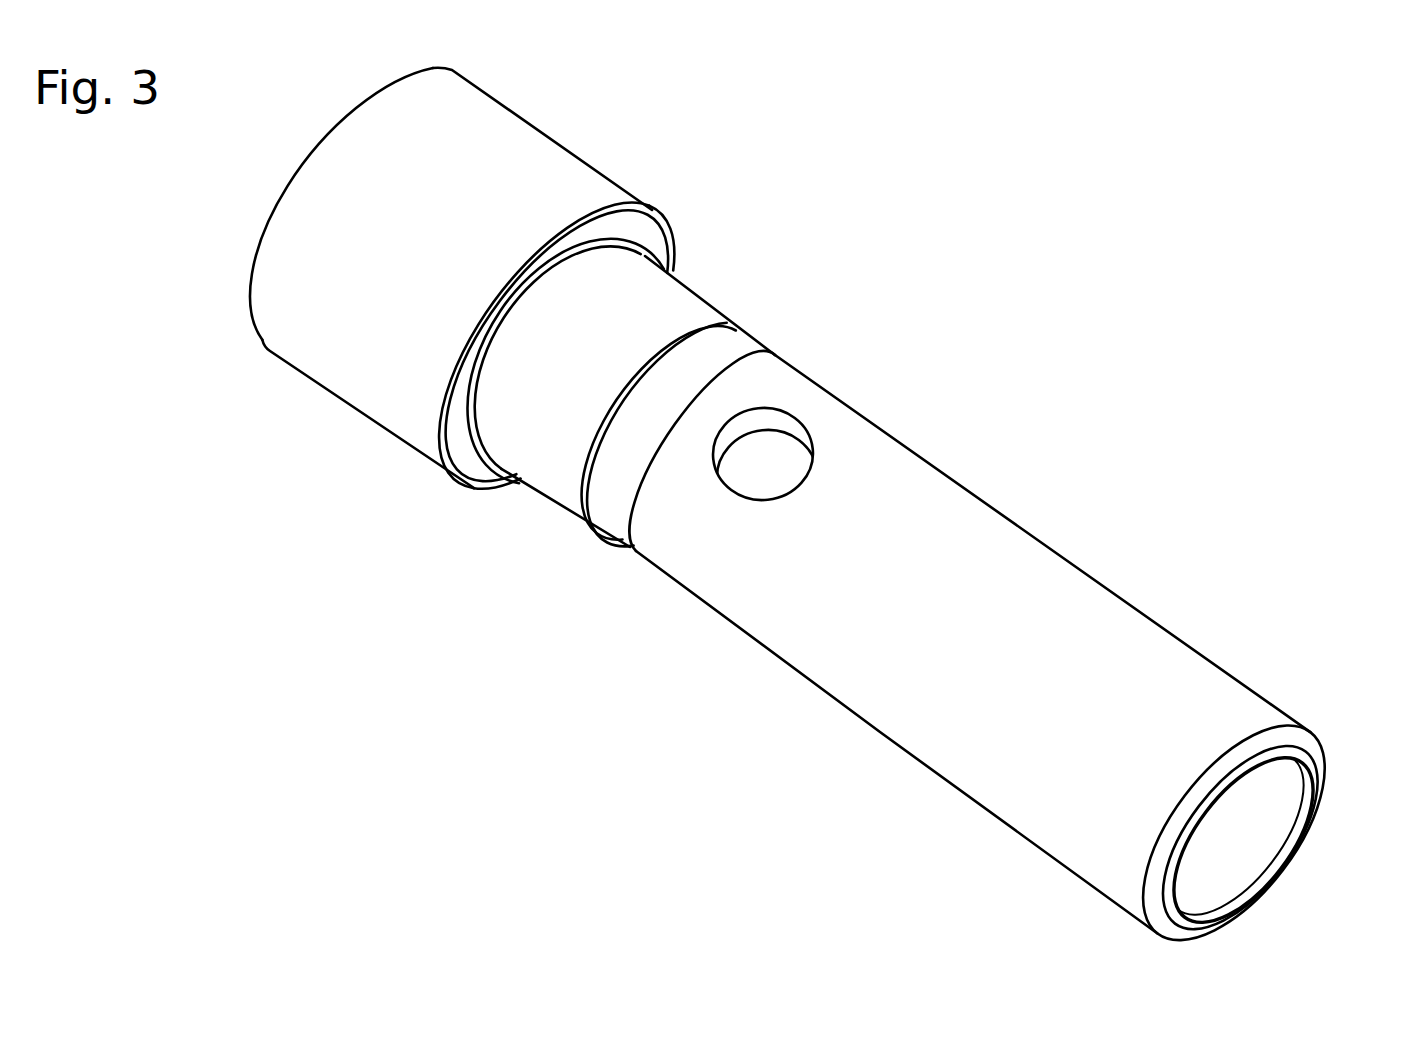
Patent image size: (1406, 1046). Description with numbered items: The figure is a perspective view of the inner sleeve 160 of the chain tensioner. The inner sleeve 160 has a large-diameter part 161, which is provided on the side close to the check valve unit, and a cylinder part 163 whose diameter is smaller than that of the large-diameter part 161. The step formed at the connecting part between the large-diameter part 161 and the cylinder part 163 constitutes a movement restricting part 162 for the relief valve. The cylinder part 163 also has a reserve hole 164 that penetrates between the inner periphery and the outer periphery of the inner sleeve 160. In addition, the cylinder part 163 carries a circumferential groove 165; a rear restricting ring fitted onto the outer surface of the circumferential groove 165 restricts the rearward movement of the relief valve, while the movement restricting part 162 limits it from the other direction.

The inner sleeve 160 is at (1245, 192).
The large-diameter part 161 is at (380, 337).
The movement restricting part 162 is at (467, 488).
The cylinder part 163 is at (808, 640).
The reserve hole 164 is at (752, 442).
The circumferential groove 165 is at (737, 347).